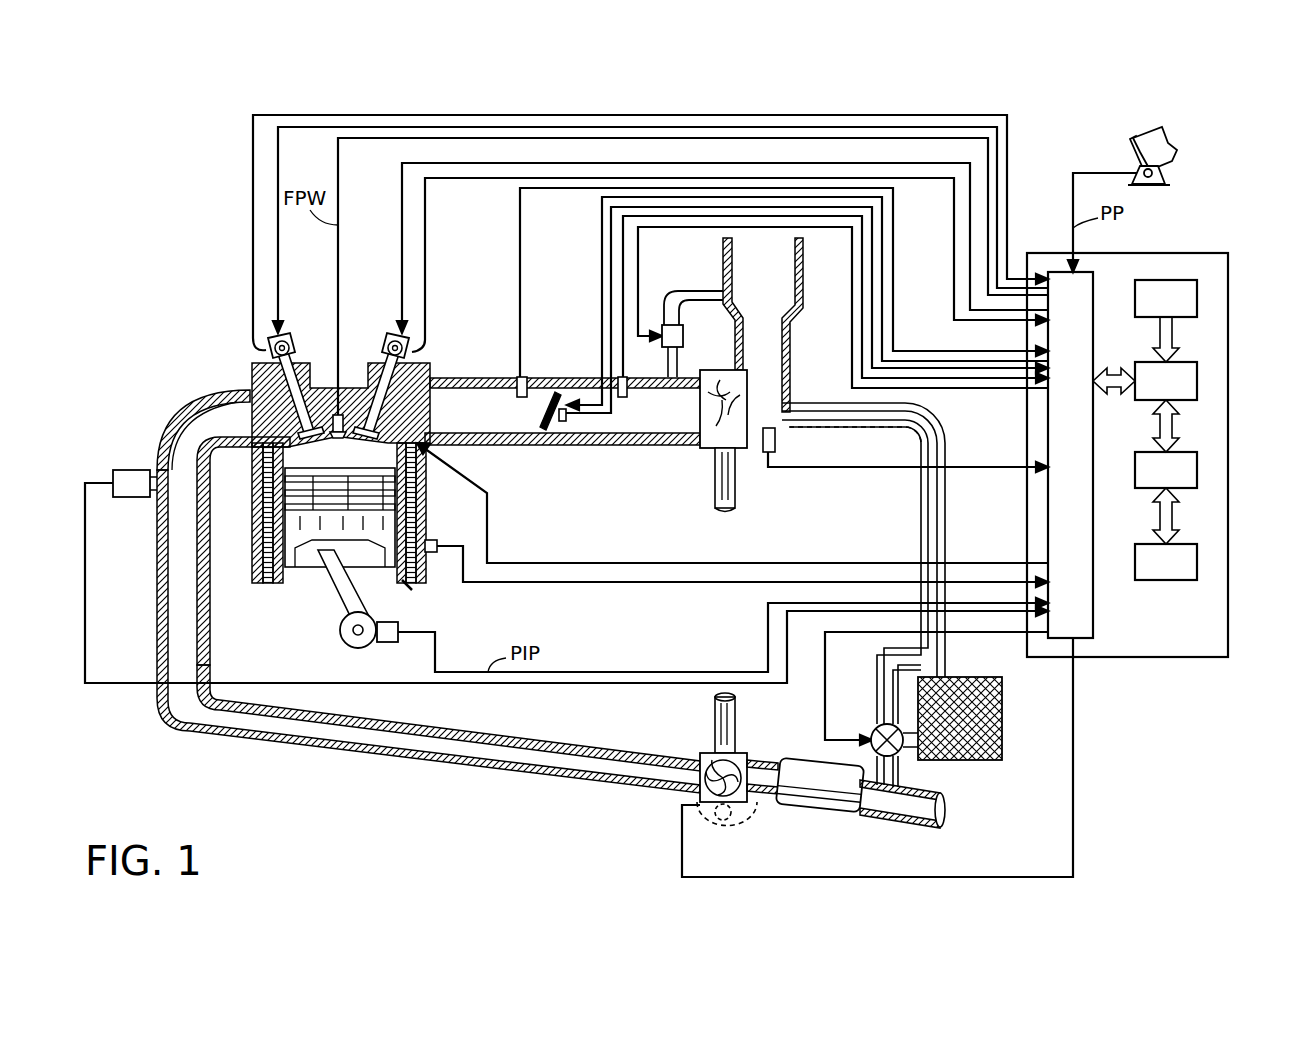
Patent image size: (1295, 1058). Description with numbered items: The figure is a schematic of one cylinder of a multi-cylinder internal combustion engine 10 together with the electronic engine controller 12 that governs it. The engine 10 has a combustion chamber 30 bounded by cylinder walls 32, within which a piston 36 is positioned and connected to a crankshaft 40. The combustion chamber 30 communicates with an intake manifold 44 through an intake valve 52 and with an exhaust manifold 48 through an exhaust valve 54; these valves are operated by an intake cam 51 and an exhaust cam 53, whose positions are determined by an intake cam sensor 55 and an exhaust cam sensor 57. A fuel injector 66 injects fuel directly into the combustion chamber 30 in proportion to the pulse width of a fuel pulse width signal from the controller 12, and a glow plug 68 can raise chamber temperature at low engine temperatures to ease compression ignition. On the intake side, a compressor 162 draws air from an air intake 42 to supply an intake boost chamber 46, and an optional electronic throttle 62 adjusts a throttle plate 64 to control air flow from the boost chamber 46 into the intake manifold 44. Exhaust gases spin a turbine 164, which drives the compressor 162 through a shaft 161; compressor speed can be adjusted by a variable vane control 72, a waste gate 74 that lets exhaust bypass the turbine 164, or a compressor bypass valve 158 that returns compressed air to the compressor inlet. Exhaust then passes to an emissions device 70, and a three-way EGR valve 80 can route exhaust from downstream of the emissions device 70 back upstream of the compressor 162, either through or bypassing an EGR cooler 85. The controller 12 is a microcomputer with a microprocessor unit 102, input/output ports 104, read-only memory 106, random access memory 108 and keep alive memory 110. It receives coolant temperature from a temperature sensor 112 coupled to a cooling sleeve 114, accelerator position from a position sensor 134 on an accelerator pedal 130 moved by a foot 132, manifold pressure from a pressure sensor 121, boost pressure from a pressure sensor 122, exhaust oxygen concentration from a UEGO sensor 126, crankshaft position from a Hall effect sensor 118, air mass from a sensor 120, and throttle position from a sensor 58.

The internal combustion engine 10 is at (190, 322).
The electronic engine controller 12 is at (1200, 253).
The combustion chamber 30 is at (338, 452).
The cylinder walls 32 is at (290, 572).
The piston 36 is at (327, 540).
The crankshaft 40 is at (348, 650).
The air intake 42 is at (763, 325).
The intake manifold 44 is at (565, 401).
The intake boost chamber 46 is at (562, 423).
The exhaust manifold 48 is at (428, 591).
The intake cam 51 is at (408, 318).
The intake valve 52 is at (382, 424).
The exhaust cam 53 is at (269, 319).
The exhaust valve 54 is at (303, 434).
The intake cam sensor 55 is at (406, 352).
The exhaust cam sensor 57 is at (270, 352).
The throttle position sensor 58 is at (565, 425).
The electronic throttle 62 is at (533, 372).
The throttle plate 64 is at (582, 403).
The fuel injector 66 is at (336, 415).
The glow plug 68 is at (467, 488).
The emissions device 70 is at (790, 810).
The variable vane control 72 is at (698, 798).
The waste gate 74 is at (730, 820).
The EGR valve 80 is at (876, 730).
The EGR cooler 85 is at (1002, 720).
The microprocessor unit 102 is at (1197, 380).
The input/output ports 104 is at (1095, 282).
The read-only memory 106 is at (1197, 297).
The random access memory 108 is at (1197, 468).
The keep alive memory 110 is at (1197, 560).
The temperature sensor 112 is at (437, 542).
The cooling sleeve 114 is at (412, 586).
The Hall effect sensor 118 is at (387, 644).
The air mass sensor 120 is at (775, 450).
The pressure sensor 121 is at (513, 378).
The pressure sensor 122 is at (625, 377).
The UEGO sensor 126 is at (113, 478).
The accelerator pedal 130 is at (1174, 151).
The foot 132 is at (1180, 147).
The position sensor 134 is at (1166, 181).
The compressor bypass valve 158 is at (664, 330).
The shaft 161 is at (716, 488).
The compressor 162 is at (700, 450).
The turbine 164 is at (700, 752).